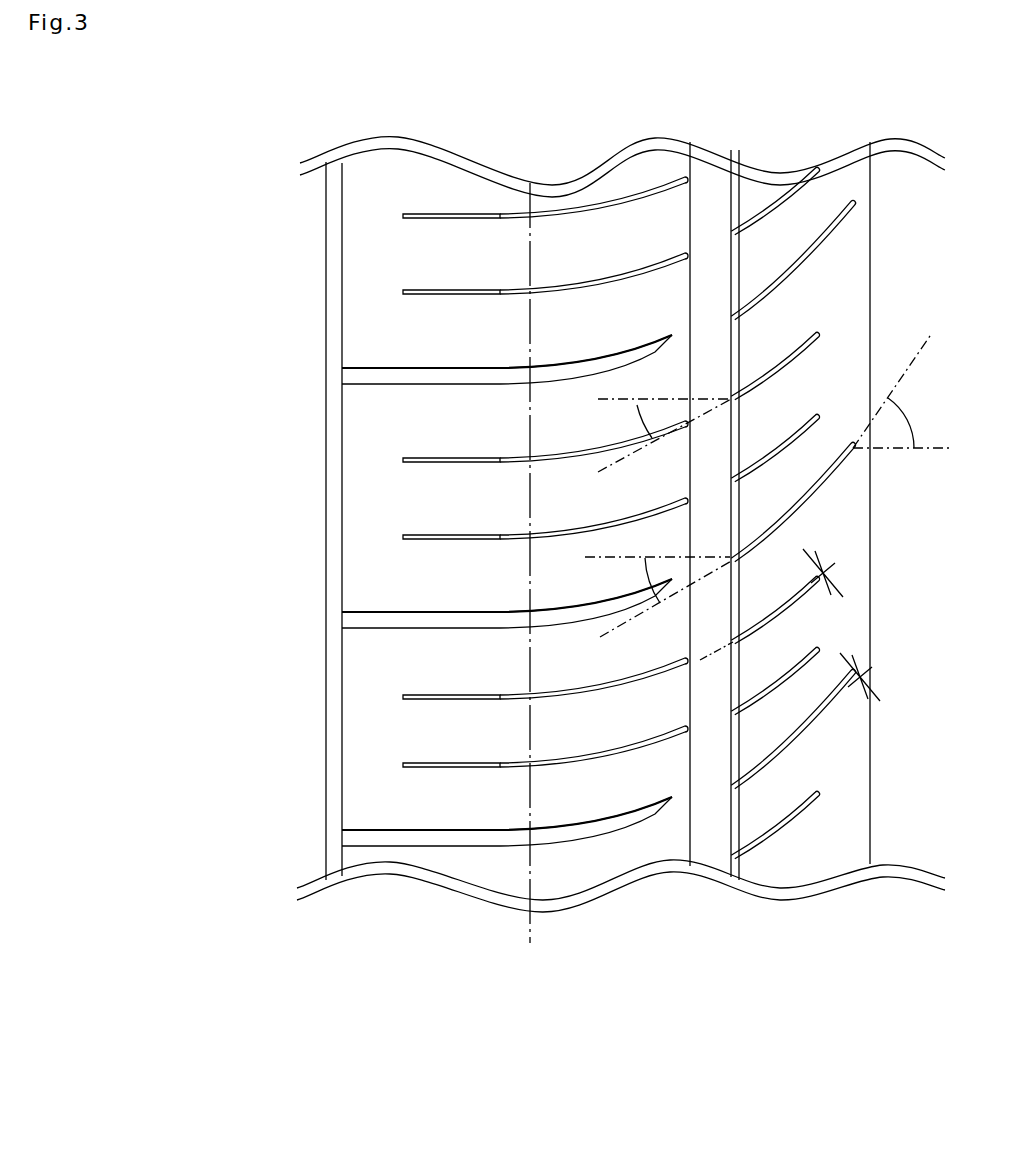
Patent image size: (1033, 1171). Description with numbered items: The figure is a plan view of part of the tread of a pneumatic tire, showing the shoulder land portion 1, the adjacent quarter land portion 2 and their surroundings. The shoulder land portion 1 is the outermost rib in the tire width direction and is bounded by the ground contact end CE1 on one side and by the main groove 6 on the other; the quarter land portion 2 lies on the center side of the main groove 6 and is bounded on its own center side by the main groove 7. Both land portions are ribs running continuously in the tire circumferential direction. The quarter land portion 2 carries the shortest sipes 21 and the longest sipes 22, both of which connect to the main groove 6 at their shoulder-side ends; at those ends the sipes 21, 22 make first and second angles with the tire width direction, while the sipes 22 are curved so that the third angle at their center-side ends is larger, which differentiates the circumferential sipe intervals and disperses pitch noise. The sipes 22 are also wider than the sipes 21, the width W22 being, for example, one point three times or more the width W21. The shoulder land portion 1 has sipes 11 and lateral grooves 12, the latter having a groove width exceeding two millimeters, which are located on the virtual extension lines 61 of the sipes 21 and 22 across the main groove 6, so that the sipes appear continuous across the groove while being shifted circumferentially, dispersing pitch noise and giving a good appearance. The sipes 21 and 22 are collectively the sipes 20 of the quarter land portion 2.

The shoulder land portion 1 is at (690, 145).
The quarter land portion 2 is at (870, 148).
The main groove 6 is at (710, 842).
The main groove 7 is at (897, 837).
The sipe 11 is at (413, 697).
The lateral groove 12 is at (390, 838).
The lateral grooves 20 is at (519, 512).
The sipe 21 is at (757, 379).
The sipe 22 is at (783, 520).
The virtual extension line 61 is at (701, 659).
The ground contact end CE1 is at (528, 925).
The width of the sipes 21 W21 is at (843, 569).
The width of the sipes 22 W22 is at (883, 677).